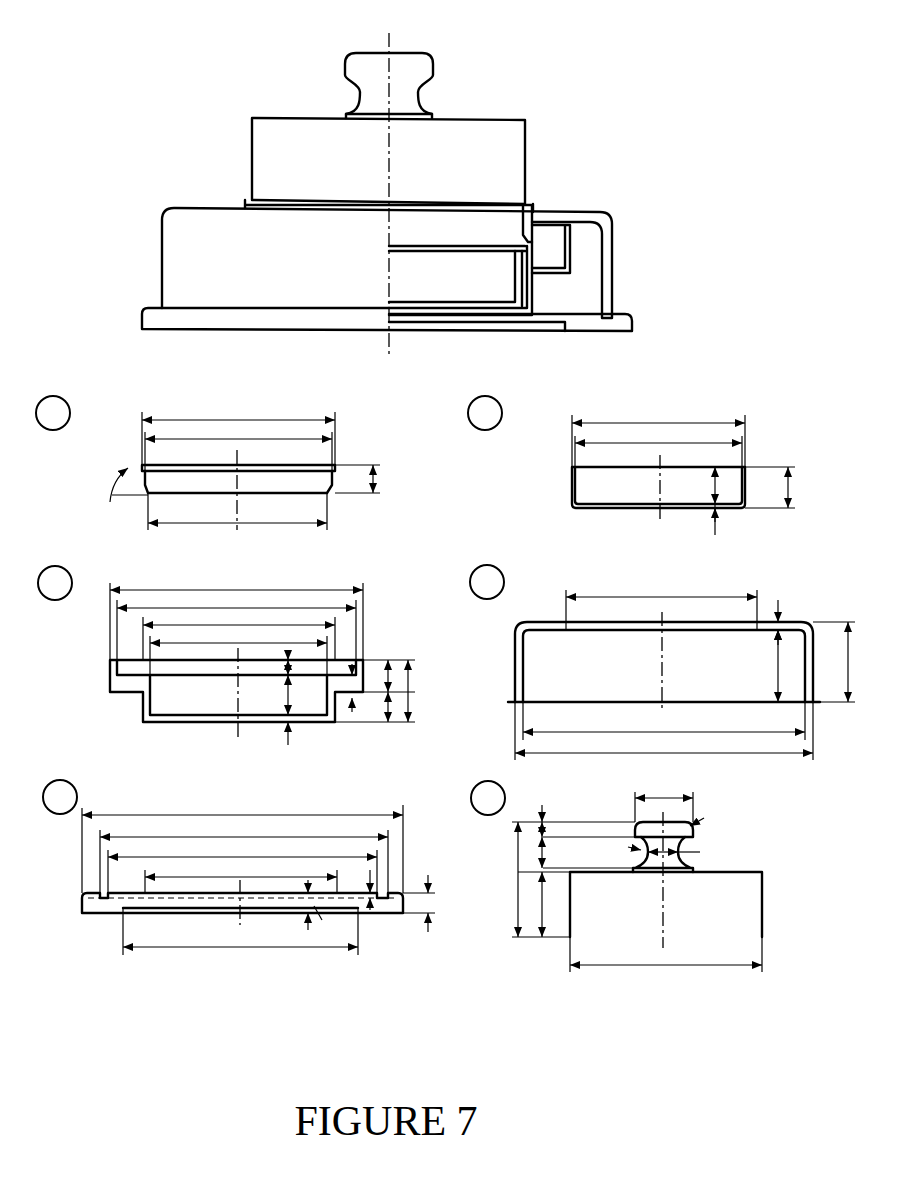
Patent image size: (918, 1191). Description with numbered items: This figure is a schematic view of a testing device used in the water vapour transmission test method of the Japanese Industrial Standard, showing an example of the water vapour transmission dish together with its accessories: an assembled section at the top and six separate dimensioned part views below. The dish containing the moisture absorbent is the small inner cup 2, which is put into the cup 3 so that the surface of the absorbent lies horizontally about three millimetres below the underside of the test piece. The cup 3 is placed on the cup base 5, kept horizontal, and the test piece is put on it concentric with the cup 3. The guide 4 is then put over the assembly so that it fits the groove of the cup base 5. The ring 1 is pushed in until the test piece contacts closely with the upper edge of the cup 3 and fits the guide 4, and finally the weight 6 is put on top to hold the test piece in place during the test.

The ring spacer 1 is at (537, 203).
The inner cup 2 is at (528, 297).
The flanged cup 3 is at (575, 245).
The outer housing cover 4 is at (618, 286).
The base plate 5 is at (605, 333).
The knob body 6 is at (506, 118).